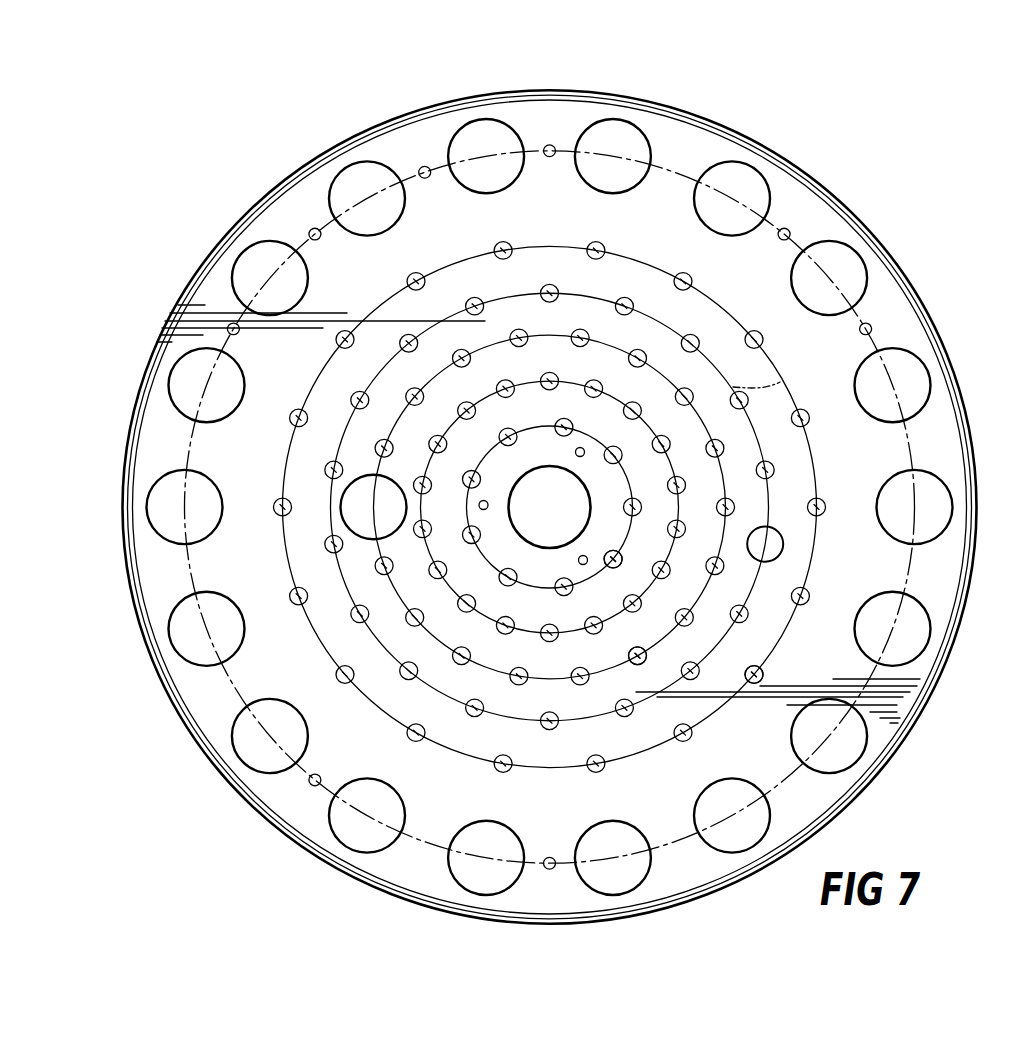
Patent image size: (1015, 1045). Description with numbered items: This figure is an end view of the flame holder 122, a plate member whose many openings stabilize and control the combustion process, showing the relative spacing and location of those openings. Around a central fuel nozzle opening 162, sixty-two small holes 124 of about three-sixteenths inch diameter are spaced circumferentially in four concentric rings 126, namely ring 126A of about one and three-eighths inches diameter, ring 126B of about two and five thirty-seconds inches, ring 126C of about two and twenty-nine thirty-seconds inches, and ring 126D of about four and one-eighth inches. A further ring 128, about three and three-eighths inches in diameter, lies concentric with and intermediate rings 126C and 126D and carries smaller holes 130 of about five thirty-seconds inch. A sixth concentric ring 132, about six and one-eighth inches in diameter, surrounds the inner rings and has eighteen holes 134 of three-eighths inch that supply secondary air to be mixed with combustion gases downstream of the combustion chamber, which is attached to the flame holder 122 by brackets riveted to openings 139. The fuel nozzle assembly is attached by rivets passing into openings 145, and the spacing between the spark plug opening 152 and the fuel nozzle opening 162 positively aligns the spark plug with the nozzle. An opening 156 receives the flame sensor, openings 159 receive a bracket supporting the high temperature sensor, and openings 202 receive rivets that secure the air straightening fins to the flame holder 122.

The flame holder 122 is at (300, 805).
The small holes 124 is at (612, 558).
The concentric rings 126 is at (525, 762).
The ring 126A is at (583, 428).
The ring 126B is at (538, 374).
The ring 126C is at (702, 404).
The ring 126D is at (803, 437).
The ring 128 is at (780, 382).
The holes 130 is at (549, 288).
The ring 132 is at (913, 573).
The holes 134 is at (766, 187).
The openings 139 is at (875, 330).
The openings 145 is at (484, 500).
The opening 152 is at (350, 502).
The opening 156 is at (778, 543).
The openings 159 is at (552, 146).
The fuel nozzle opening 162 is at (564, 521).
The openings 202 is at (797, 238).